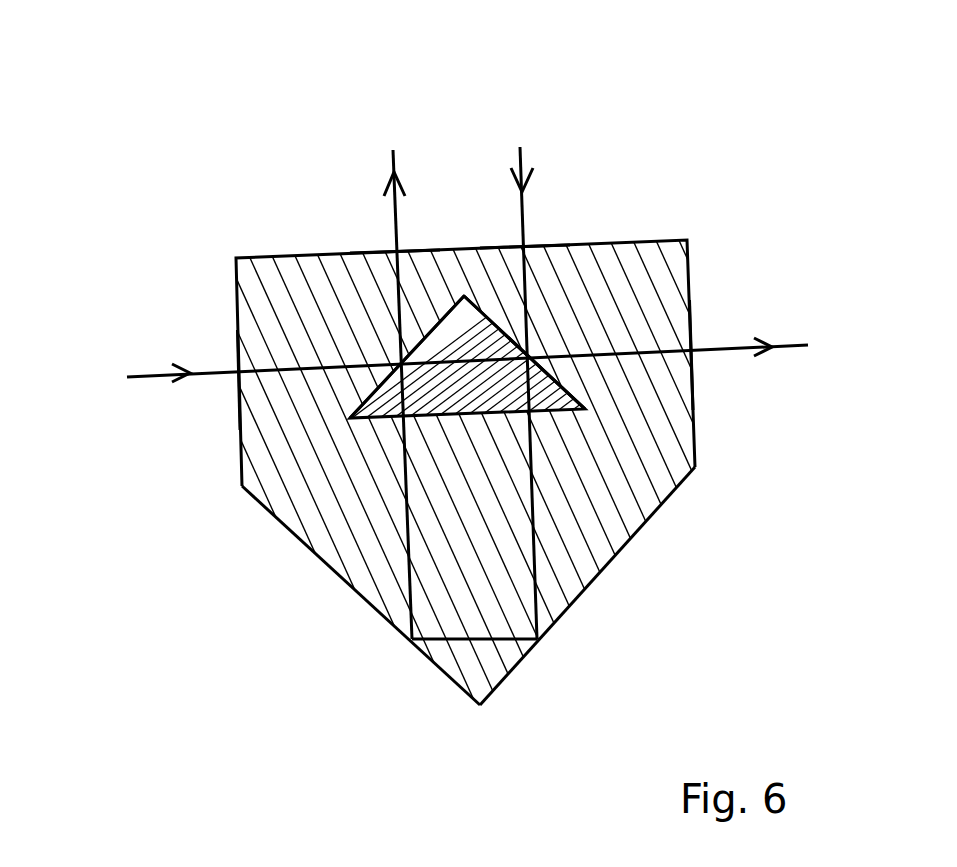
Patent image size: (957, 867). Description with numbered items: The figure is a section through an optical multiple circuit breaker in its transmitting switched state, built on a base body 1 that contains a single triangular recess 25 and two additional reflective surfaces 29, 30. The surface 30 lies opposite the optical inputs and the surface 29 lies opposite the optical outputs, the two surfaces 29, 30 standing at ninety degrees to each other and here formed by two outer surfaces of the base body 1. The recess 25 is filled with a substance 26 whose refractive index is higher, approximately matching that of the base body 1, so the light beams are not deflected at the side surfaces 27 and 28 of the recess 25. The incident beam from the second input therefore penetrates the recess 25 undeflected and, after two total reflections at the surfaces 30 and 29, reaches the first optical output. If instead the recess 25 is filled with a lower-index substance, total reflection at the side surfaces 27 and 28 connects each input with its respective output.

The base body 1 is at (288, 252).
The triangular recess 25 is at (376, 420).
The substance 26 is at (477, 335).
The side surface 27 is at (425, 332).
The side surface 28 is at (497, 338).
The additional reflective surface 29 is at (368, 608).
The additional reflective surface 30 is at (595, 582).